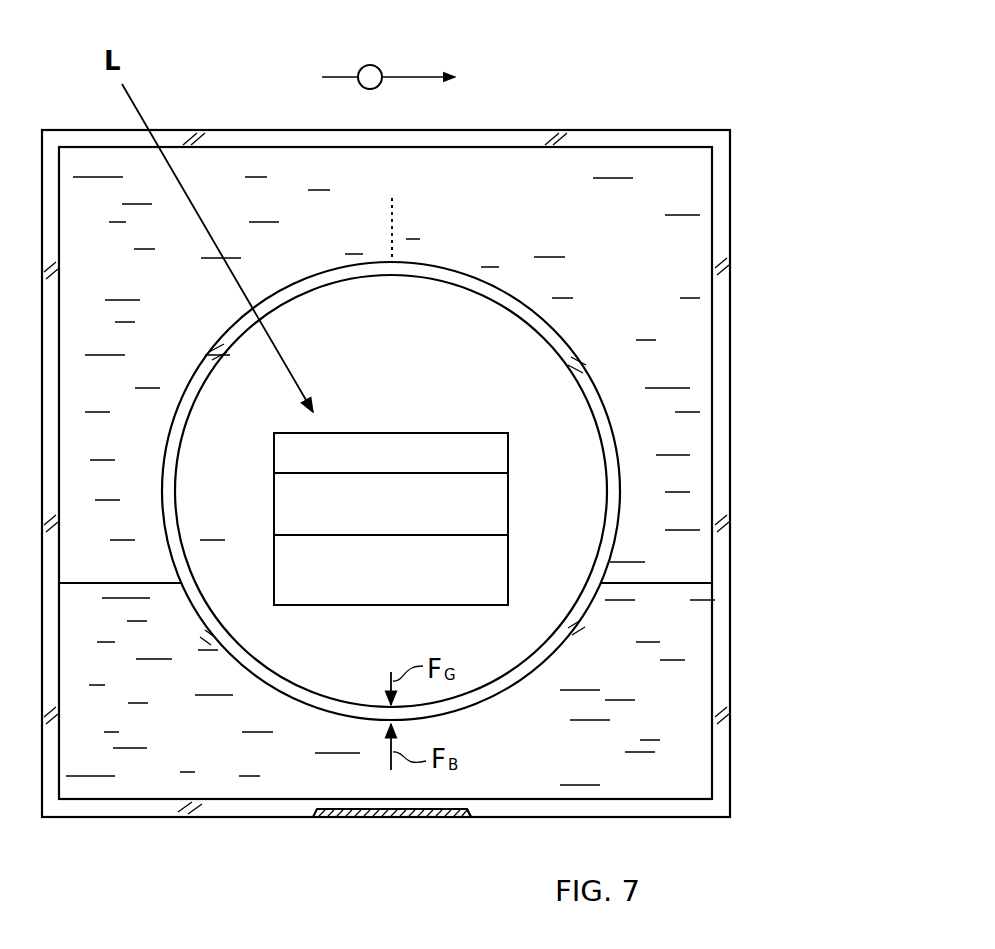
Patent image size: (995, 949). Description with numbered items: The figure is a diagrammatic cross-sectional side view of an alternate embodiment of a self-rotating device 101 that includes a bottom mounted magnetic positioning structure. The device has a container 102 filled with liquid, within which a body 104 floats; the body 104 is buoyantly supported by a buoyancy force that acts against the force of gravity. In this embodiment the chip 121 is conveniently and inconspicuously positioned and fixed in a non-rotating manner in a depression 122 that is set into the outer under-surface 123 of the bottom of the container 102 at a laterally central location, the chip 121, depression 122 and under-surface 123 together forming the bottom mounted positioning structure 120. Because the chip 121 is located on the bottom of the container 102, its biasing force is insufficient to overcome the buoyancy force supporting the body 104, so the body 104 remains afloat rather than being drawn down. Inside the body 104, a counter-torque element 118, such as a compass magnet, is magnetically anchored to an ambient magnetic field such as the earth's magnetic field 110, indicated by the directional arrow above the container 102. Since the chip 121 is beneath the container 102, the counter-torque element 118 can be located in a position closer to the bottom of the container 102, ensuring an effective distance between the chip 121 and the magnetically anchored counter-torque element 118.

The self-rotating device 101 is at (816, 120).
The container 102 is at (730, 210).
The body 104 is at (628, 370).
The earth's magnetic field 110 is at (376, 65).
The counter-torque element 118 is at (508, 571).
The base mount 120 is at (320, 826).
The chip 121 is at (393, 818).
The depression 122 is at (473, 810).
The outer under-surface 123 is at (294, 818).